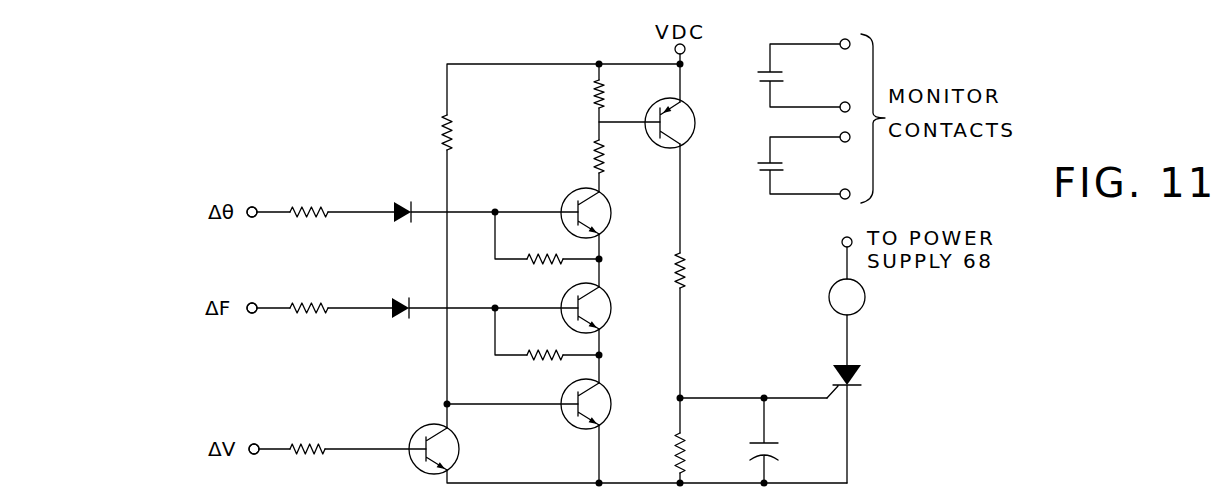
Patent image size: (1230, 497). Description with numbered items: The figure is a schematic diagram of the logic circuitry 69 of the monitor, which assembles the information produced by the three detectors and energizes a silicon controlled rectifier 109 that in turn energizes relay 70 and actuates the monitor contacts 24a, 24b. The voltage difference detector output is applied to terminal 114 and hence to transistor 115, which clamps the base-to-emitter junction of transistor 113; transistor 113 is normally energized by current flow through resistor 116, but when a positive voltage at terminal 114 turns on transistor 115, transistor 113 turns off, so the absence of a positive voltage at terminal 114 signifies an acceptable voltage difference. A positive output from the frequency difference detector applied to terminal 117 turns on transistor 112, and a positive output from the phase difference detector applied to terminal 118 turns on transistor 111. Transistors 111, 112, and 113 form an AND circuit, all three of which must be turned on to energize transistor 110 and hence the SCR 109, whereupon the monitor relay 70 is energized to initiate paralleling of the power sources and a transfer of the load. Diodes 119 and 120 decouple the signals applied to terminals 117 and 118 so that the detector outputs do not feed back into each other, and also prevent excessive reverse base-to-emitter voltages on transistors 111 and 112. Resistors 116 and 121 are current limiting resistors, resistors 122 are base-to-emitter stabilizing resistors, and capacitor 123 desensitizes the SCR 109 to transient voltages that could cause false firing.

The logic circuitry 69 is at (342, 135).
The resistor 116 is at (444, 125).
The terminal 118 is at (256, 206).
The terminal 117 is at (252, 314).
The terminal 114 is at (251, 444).
The resistors 121 is at (300, 216).
The resistors 122 is at (595, 88).
The diode 120 is at (402, 225).
The diode 119 is at (398, 321).
The transistor 110 is at (696, 123).
The transistor 111 is at (612, 213).
The transistor 112 is at (612, 310).
The transistor 113 is at (613, 400).
The transistor 115 is at (460, 463).
The monitor contact 24a is at (784, 72).
The monitor contact 24b is at (784, 163).
The relay 70 is at (866, 305).
The silicon controlled rectifier 109 is at (856, 375).
The capacitor 123 is at (779, 443).